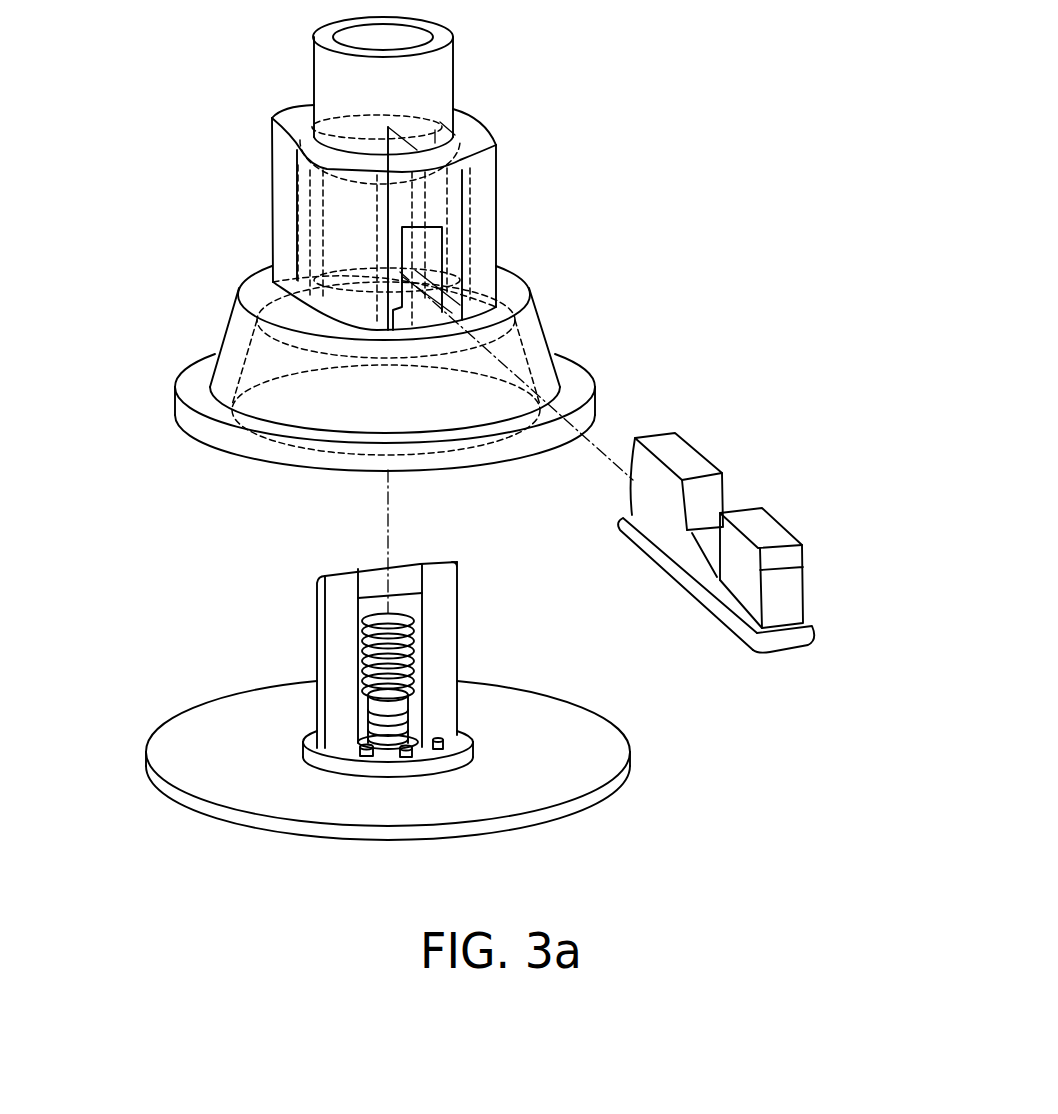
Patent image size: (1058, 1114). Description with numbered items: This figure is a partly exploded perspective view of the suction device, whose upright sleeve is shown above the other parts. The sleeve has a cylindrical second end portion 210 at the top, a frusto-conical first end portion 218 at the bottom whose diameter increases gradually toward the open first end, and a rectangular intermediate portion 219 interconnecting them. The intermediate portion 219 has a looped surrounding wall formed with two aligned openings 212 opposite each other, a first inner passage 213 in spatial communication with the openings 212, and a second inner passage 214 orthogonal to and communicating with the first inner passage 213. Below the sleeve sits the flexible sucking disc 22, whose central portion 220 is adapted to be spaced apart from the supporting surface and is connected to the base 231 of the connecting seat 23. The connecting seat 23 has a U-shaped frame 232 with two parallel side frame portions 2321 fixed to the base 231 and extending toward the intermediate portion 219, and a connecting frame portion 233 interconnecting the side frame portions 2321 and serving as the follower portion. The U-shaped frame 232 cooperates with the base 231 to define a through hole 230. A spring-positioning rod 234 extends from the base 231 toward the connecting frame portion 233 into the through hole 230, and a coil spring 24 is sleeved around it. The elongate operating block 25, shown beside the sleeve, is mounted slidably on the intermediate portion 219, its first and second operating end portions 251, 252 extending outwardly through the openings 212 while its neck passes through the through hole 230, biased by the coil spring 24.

The cylindrical second end portion 210 is at (450, 67).
The second inner passage 214 is at (443, 124).
The first inner passage 213 is at (496, 139).
The openings 212 is at (440, 237).
The frusto-conical first end portion 218 is at (238, 288).
The rectangular intermediate portion 219 is at (503, 250).
The elongate operating block 25 is at (775, 515).
The first operating end portion 251 is at (635, 438).
The second operating end portion 252 is at (788, 562).
The connecting seat 23 is at (377, 712).
The U-shaped frame 232 is at (320, 713).
The side frame portions 2321 is at (340, 682).
The connecting frame portion 233 is at (367, 585).
The spring-positioning rod 234 is at (382, 725).
The base 231 is at (470, 738).
The coil spring 24 is at (337, 746).
The through hole 230 is at (430, 738).
The flexible sucking disc 22 is at (432, 760).
The central portion 220 is at (515, 740).